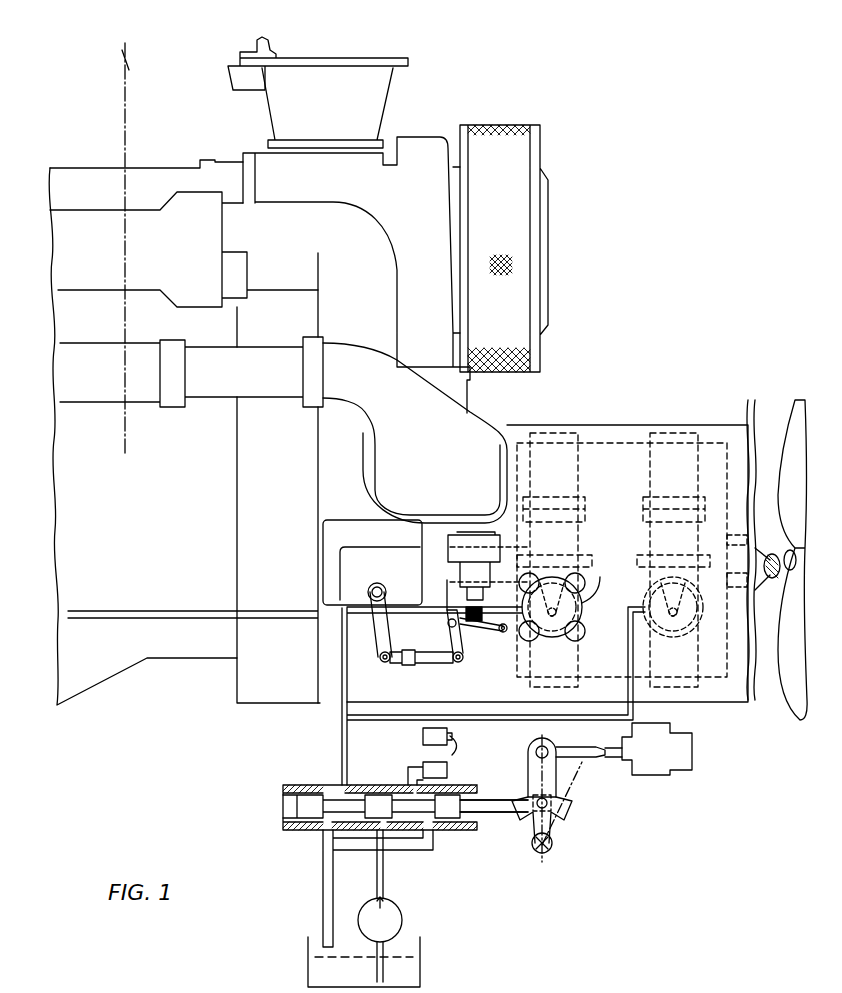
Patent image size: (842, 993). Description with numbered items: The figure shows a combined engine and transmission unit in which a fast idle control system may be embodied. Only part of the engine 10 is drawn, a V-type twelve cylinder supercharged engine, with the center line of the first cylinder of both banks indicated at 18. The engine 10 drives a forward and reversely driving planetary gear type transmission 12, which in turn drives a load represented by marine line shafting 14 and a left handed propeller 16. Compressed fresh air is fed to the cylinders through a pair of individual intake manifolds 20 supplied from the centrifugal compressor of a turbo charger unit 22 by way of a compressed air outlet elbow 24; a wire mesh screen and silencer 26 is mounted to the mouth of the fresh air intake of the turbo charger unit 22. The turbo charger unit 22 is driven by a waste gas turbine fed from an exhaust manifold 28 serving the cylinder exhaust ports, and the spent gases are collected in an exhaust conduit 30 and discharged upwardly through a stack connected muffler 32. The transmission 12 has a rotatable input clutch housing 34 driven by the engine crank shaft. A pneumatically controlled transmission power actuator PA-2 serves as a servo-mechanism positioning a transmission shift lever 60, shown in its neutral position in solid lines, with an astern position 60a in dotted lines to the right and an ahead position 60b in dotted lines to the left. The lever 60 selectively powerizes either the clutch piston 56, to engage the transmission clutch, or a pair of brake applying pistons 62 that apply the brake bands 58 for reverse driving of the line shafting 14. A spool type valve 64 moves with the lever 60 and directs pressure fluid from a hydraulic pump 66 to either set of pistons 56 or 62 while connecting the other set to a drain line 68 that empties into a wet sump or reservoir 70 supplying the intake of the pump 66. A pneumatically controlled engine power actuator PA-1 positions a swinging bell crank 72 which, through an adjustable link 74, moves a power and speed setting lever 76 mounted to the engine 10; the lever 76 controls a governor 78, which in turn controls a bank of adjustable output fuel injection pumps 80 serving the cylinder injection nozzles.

The engine 10 is at (80, 530).
The forward and reversely driving planetary gear type transmission 12 is at (610, 430).
The marine line shafting 14 is at (748, 425).
The left handed marine propulsion screw or propeller 16 is at (797, 398).
The center line of the No. 1 cylinder 18 is at (123, 127).
The intake manifolds 20 is at (145, 395).
The turbo charger unit 22 is at (390, 147).
The compressed air outlet elbow 24 is at (472, 430).
The wire mesh screen and silencer 26 is at (535, 158).
The exhaust manifold 28 is at (155, 170).
The exhaust conduit 30 is at (380, 87).
The stack connected muffler 32 is at (247, 55).
The rotatable input clutch housing 34 is at (423, 733).
The clutch piston 56 is at (423, 755).
The brake bands 58 is at (548, 437).
The transmission shift lever 60 is at (555, 752).
The astern position 60a is at (580, 770).
The ahead position 60b is at (527, 800).
The brake applying pistons 62 is at (643, 592).
The spool type valve 64 is at (448, 815).
The hydraulic pump 66 is at (402, 916).
The drain line 68 is at (322, 879).
The wet sump or reservoir 70 is at (422, 960).
The swinging bell crank 72 is at (460, 650).
The adjustable link 74 is at (418, 662).
The power and speed setting lever 76 is at (378, 637).
The governor 78 is at (348, 562).
The fuel injection pumps 80 is at (345, 520).
The engine power actuator PA-1 is at (463, 571).
The transmission power actuator PA-2 is at (688, 771).